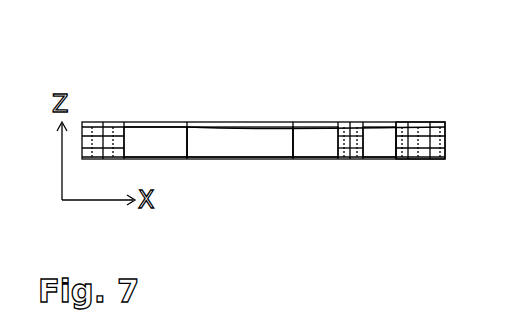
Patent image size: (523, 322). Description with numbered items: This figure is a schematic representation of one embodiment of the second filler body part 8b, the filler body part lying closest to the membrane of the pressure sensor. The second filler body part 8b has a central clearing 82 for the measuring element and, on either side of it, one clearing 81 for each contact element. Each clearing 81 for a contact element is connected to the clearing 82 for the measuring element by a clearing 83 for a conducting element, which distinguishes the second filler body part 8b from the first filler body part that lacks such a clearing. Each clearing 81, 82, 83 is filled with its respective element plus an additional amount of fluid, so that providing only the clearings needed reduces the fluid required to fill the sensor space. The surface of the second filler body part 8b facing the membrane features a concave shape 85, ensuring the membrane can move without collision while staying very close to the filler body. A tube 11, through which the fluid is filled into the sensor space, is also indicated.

The concave shape 85 is at (190, 120).
The clearing for a contact element 81 is at (153, 138).
The clearing for a conducting element 83 is at (182, 137).
The clearing for a measuring element 82 is at (255, 139).
The tube 11 is at (385, 142).
The second filler body part 8b is at (410, 142).